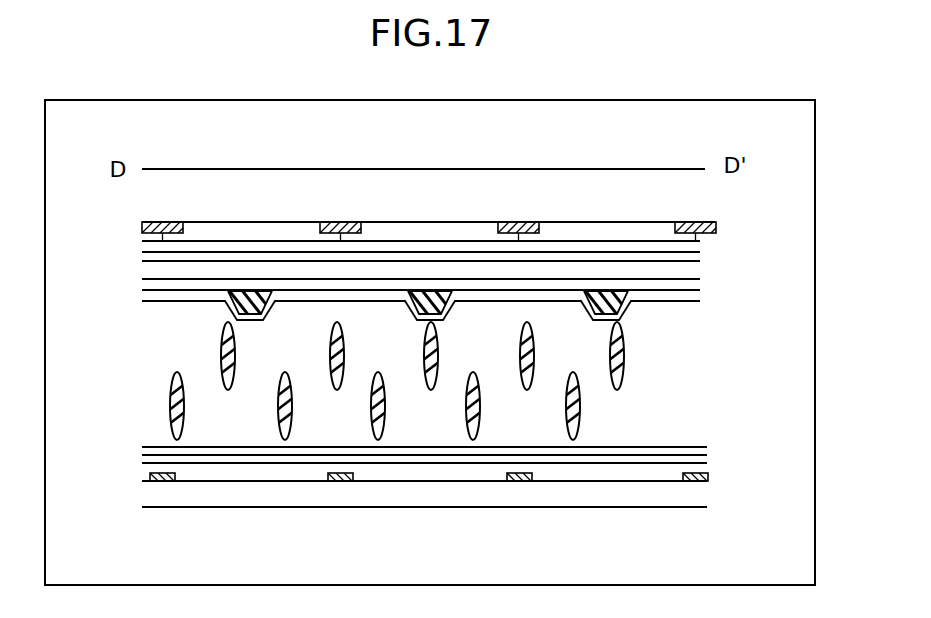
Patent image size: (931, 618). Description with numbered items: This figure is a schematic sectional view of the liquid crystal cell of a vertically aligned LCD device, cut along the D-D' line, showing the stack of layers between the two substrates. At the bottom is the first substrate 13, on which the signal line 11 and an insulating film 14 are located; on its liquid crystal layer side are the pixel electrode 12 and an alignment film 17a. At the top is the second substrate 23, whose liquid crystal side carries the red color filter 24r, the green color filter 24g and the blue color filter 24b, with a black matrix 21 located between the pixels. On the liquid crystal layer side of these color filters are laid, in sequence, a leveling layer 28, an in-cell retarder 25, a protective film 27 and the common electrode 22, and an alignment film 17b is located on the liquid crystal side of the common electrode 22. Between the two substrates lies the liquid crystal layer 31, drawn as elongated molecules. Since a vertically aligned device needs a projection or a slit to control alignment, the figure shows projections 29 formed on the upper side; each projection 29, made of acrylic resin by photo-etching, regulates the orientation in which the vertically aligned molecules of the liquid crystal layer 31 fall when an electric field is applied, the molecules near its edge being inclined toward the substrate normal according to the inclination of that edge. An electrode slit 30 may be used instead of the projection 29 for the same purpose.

The signal line 11 is at (340, 484).
The pixel electrode 12 is at (707, 462).
The first substrate 13 is at (208, 498).
The insulating film 14 is at (603, 473).
The alignment film 17a is at (707, 449).
The alignment film 17b is at (700, 299).
The black matrix 21 is at (163, 222).
The common electrode 22 is at (142, 290).
The second substrate 23 is at (520, 168).
The red color filter 24r is at (243, 222).
The green color filter 24g is at (420, 222).
The blue color filter 24b is at (600, 222).
The in-cell retarder 25 is at (700, 253).
The protective film 27 is at (700, 269).
The leveling layer 28 is at (700, 241).
The projection 29 is at (628, 305).
The slit 30 is at (428, 458).
The liquid crystal layer 31 is at (579, 402).